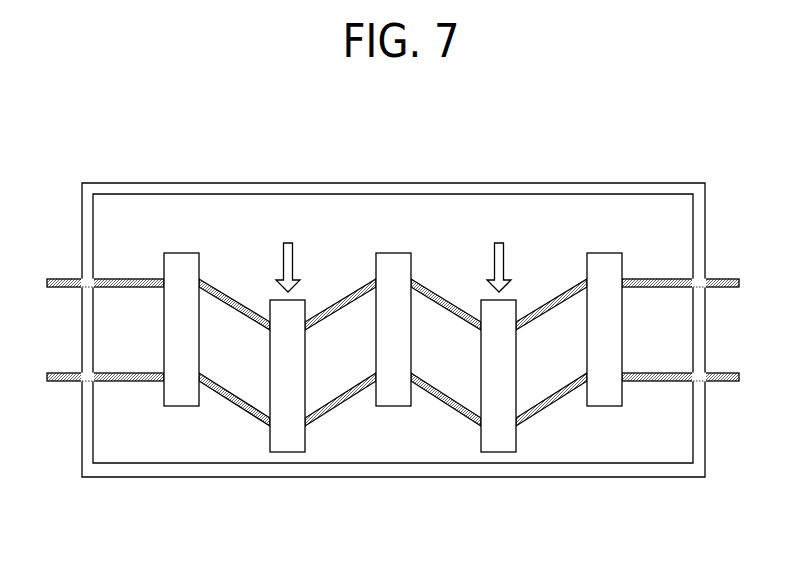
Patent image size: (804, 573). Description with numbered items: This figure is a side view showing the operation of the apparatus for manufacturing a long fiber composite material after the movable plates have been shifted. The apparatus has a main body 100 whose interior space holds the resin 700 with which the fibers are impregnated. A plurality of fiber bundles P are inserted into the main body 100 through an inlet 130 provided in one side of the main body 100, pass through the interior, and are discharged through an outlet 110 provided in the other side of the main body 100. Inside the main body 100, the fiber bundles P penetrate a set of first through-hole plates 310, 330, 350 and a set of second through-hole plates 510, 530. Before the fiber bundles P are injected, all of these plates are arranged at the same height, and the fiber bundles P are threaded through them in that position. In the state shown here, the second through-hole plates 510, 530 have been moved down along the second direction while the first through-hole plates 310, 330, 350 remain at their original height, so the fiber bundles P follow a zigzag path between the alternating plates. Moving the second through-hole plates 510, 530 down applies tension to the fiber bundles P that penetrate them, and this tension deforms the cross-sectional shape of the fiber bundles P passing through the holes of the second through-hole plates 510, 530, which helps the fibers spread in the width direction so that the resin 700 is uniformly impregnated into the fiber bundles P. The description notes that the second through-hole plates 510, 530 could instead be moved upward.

The main body 100 is at (562, 183).
The outlet 110 is at (698, 272).
The inlet 130 is at (88, 276).
The fiber bundle P is at (127, 290).
The first through-hole plate 310 is at (184, 406).
The first through-hole plate 330 is at (392, 406).
The first through-hole plate 350 is at (605, 406).
The second through-hole plate 510 is at (290, 452).
The second through-hole plate 530 is at (497, 452).
The resin 700 is at (651, 433).